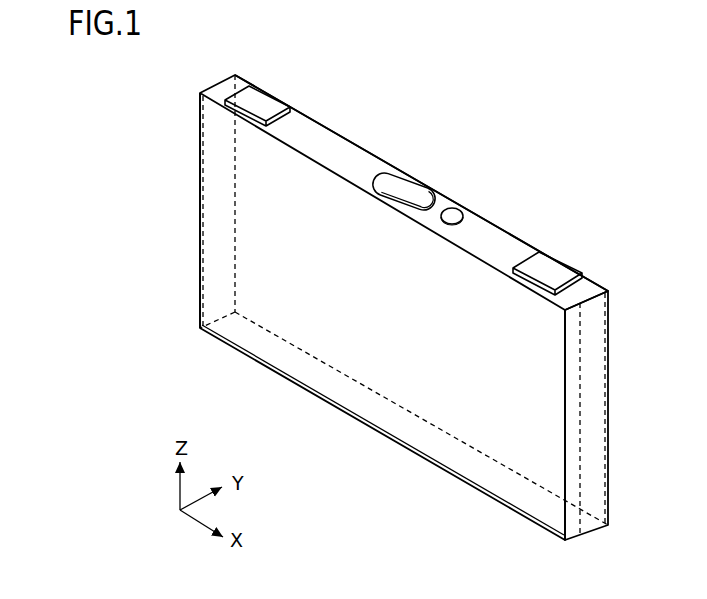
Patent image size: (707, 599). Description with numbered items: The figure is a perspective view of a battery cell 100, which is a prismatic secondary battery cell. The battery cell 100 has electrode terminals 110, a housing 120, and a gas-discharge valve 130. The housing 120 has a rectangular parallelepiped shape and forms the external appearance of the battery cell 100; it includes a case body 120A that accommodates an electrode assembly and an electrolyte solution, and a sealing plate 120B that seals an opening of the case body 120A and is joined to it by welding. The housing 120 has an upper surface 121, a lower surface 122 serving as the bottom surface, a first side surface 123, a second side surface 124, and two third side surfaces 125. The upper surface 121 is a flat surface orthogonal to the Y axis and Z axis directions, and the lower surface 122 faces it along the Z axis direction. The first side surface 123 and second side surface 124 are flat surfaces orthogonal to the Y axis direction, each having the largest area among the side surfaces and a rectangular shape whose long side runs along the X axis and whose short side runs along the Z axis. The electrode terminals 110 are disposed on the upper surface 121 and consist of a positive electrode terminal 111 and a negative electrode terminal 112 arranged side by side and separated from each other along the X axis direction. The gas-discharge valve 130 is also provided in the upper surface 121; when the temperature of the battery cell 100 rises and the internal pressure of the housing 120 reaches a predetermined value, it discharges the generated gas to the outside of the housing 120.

The battery cell 100 is at (390, 303).
The electrode terminals 110 is at (416, 164).
The positive electrode terminal 111 is at (260, 100).
The negative electrode terminal 112 is at (548, 268).
The housing 120 is at (390, 326).
The case body 120A is at (382, 316).
The sealing plate 120B is at (404, 192).
The upper surface 121 is at (338, 153).
The lower surface 122 is at (518, 495).
The first side surface 123 is at (412, 375).
The second side surface 124 is at (465, 363).
The third side surfaces 125 is at (222, 236).
The gas-discharge valve 130 is at (403, 192).